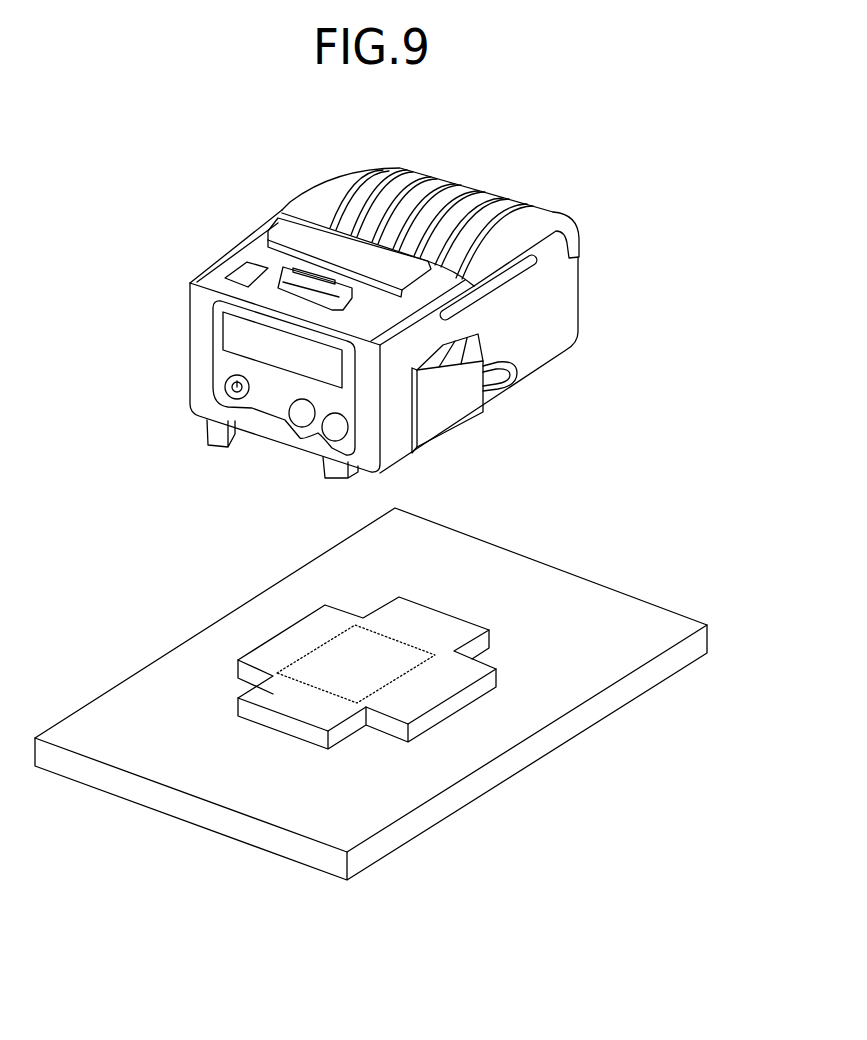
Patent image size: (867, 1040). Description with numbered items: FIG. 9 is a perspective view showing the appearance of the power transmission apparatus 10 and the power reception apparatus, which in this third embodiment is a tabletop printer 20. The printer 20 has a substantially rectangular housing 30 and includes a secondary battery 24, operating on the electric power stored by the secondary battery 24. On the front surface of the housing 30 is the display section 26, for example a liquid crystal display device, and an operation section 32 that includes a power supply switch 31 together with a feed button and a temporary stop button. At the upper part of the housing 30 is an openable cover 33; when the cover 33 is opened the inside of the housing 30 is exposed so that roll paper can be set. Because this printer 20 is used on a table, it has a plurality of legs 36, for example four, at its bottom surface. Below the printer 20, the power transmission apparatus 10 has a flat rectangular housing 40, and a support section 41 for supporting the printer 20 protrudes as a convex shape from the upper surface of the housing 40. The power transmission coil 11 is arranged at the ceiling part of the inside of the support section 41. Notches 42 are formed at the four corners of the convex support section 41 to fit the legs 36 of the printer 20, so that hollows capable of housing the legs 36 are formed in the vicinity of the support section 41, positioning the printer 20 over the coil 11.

The power transmission apparatus 10 is at (638, 576).
The power transmission coil 11 is at (393, 638).
The printer 20 is at (518, 186).
The secondary battery 24 is at (437, 433).
The display section 26 is at (310, 362).
The housing 30 is at (302, 192).
The power supply switch 31 is at (218, 386).
The operation section 32 is at (275, 400).
The cover 33 is at (438, 177).
The legs 36 is at (210, 438).
The housing 40 is at (485, 727).
The support section 41 is at (290, 700).
The notches 42 is at (365, 618).